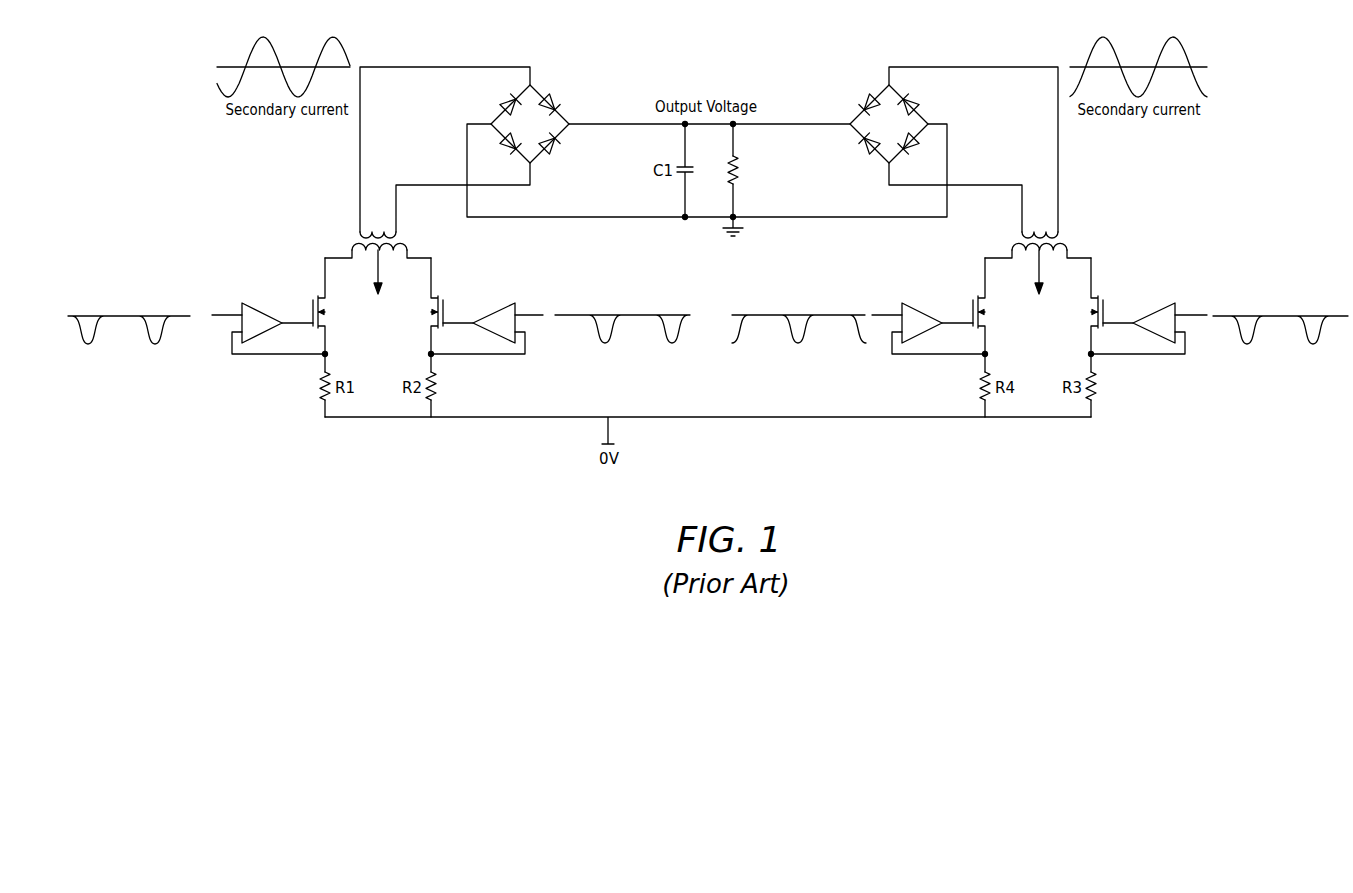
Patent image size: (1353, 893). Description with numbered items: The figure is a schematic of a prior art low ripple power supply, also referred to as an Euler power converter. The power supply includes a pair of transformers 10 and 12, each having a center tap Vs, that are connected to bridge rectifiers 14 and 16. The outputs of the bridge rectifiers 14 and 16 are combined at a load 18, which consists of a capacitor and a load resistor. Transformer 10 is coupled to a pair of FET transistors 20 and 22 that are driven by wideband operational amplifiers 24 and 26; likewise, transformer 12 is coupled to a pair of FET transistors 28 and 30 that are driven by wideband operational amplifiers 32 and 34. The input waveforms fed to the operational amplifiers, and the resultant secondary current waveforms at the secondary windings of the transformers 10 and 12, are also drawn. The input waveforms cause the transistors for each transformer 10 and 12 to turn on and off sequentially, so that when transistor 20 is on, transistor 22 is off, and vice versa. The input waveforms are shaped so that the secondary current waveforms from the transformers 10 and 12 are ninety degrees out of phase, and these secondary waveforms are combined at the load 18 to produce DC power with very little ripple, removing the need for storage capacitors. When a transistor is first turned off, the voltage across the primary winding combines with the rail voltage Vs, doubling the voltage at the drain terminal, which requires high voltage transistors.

The transformer 10 is at (395, 241).
The transformer 12 is at (1058, 241).
The bridge rectifier 14 is at (497, 115).
The bridge rectifier 16 is at (929, 121).
The load 18 is at (736, 184).
The FET transistor 20 is at (312, 306).
The FET transistor 22 is at (445, 309).
The wideband operational amplifier 24 is at (248, 345).
The wideband operational amplifier 26 is at (490, 330).
The FET transistor 28 is at (973, 304).
The FET transistor 30 is at (1105, 310).
The wideband operational amplifier 32 is at (913, 332).
The wideband operational amplifier 34 is at (1157, 330).